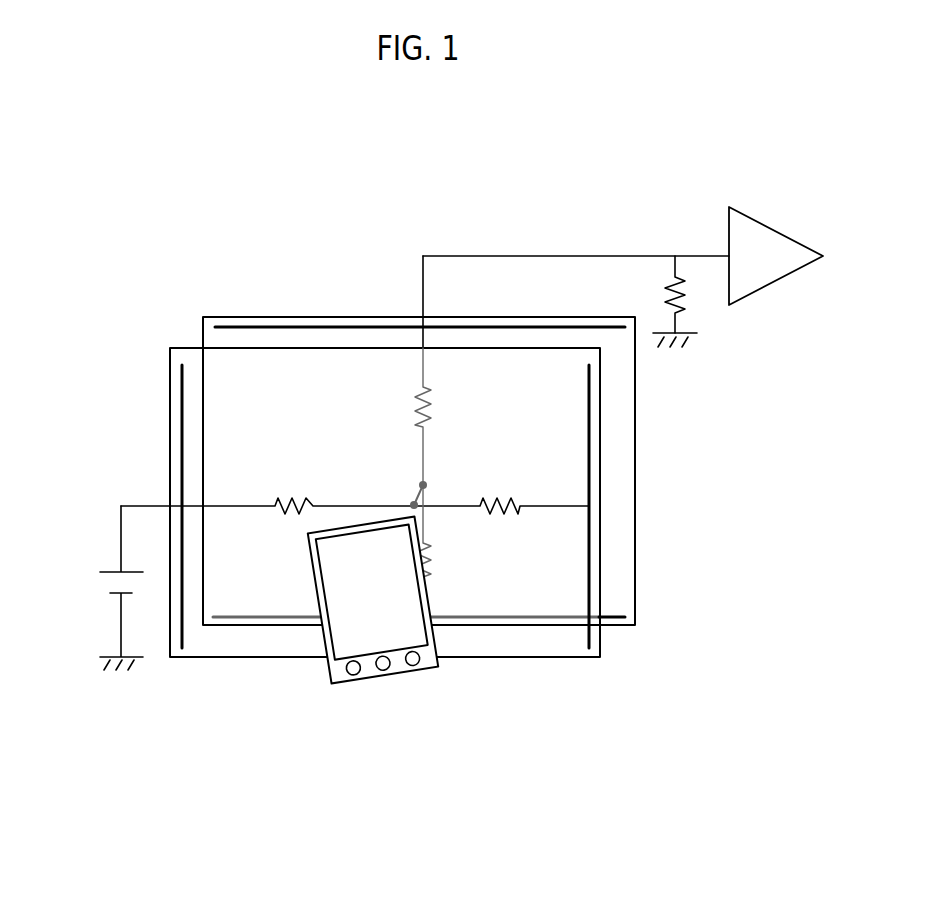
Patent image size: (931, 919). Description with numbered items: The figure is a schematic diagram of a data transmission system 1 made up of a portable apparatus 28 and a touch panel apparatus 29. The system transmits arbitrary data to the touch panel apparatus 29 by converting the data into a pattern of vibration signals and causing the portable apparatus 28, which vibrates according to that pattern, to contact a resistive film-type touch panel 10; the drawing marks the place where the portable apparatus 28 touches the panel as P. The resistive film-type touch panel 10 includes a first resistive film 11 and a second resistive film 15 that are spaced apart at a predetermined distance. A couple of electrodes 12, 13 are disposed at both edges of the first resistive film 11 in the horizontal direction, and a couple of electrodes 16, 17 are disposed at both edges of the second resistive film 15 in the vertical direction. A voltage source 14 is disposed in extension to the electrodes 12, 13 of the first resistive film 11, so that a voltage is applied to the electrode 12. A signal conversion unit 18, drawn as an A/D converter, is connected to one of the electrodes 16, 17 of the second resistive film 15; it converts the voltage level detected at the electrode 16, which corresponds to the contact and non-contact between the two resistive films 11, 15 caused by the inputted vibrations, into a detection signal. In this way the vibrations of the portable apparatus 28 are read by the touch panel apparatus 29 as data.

The data transmission system 1 is at (156, 241).
The resistive film-type touch panel 10 is at (169, 323).
The first resistive film 11 is at (170, 388).
The electrode 12 is at (182, 445).
The electrode 13 is at (589, 450).
The voltage source 14 is at (95, 588).
The second resistive film 15 is at (243, 317).
The electrode 16 is at (325, 327).
The electrode 17 is at (248, 618).
The signal conversion unit 18 is at (775, 227).
The portable apparatus 28 is at (393, 687).
The touch panel apparatus 29 is at (376, 241).
The touch point P is at (411, 501).